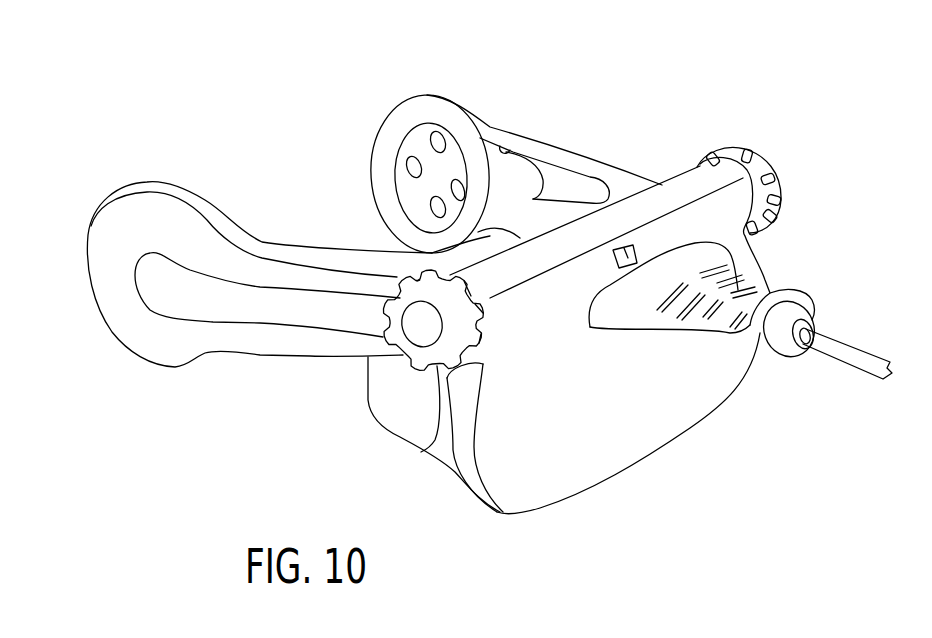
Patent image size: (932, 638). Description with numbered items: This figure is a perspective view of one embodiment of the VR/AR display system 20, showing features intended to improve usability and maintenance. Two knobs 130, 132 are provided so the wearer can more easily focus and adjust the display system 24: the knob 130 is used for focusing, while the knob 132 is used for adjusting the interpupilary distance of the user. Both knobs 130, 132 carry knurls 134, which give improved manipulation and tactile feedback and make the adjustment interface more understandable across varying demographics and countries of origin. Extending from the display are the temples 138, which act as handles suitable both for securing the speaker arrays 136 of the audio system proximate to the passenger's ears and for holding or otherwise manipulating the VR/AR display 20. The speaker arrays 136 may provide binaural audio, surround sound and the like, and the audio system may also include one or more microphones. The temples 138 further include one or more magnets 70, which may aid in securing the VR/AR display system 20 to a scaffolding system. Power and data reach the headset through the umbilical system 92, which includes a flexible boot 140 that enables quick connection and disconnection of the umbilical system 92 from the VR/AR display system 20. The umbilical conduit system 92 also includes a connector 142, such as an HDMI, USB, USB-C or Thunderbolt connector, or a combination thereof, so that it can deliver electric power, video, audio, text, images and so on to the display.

The VR/AR display system 20 is at (625, 42).
The display system 24 is at (593, 416).
The magnets 70 is at (542, 187).
The umbilical system 92 is at (837, 352).
The knob 130 is at (422, 450).
The knob 132 is at (770, 153).
The knurls 134 is at (488, 285).
The speaker arrays 136 is at (244, 190).
The temples 138 is at (598, 164).
The flexible boot 140 is at (621, 320).
The connector 142 is at (634, 250).